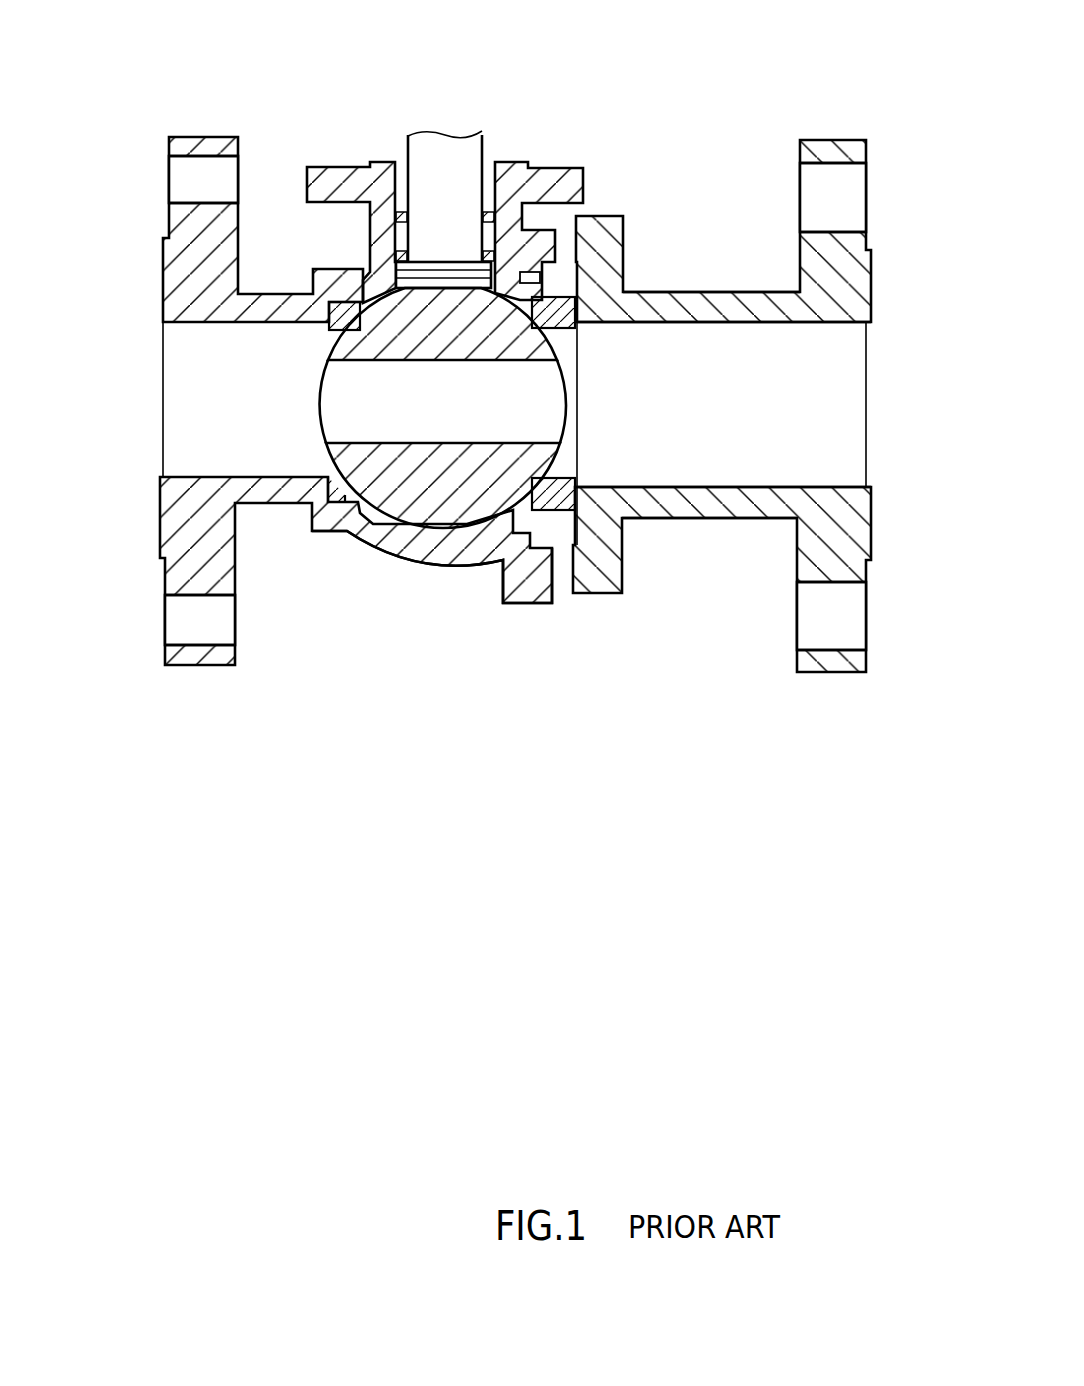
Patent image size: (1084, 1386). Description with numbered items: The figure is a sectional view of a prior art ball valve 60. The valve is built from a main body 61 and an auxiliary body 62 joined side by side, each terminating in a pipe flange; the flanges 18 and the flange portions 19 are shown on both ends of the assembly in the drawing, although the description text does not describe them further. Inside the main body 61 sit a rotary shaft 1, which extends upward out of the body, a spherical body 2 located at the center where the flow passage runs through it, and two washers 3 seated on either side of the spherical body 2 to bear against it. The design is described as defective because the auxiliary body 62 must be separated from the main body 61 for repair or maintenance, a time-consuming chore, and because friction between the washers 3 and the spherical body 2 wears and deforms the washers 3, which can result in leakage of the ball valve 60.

The rotary shaft 1 is at (466, 160).
The spherical body 2 is at (492, 303).
The washers 3 is at (558, 312).
The flange 18 is at (200, 518).
The flange bolt hole / face 19 is at (200, 617).
The prior art ball valve 60 is at (658, 92).
The main body 61 is at (446, 548).
The auxiliary body 62 is at (690, 508).